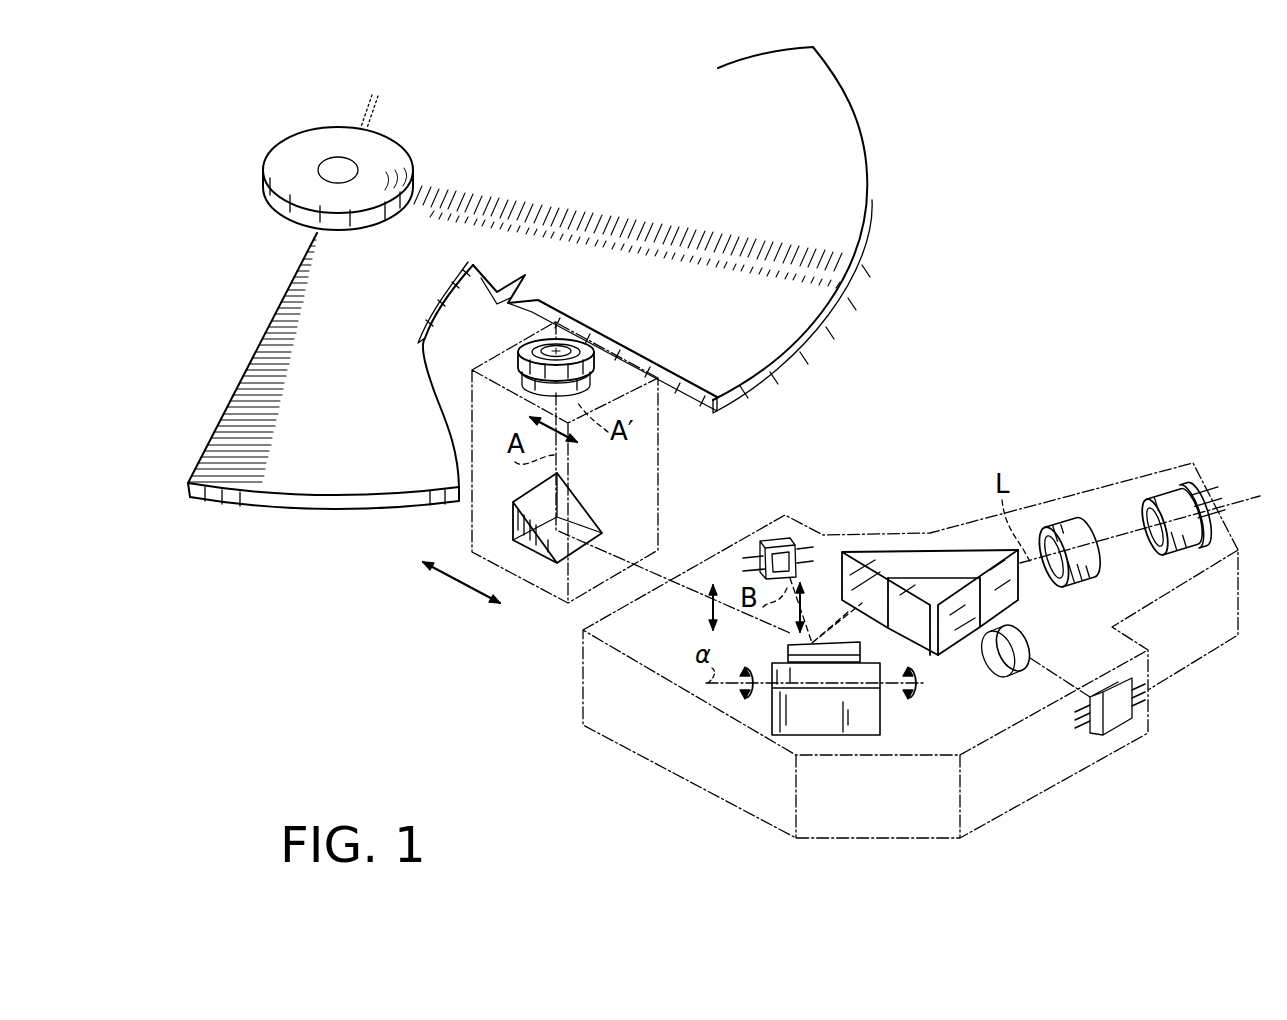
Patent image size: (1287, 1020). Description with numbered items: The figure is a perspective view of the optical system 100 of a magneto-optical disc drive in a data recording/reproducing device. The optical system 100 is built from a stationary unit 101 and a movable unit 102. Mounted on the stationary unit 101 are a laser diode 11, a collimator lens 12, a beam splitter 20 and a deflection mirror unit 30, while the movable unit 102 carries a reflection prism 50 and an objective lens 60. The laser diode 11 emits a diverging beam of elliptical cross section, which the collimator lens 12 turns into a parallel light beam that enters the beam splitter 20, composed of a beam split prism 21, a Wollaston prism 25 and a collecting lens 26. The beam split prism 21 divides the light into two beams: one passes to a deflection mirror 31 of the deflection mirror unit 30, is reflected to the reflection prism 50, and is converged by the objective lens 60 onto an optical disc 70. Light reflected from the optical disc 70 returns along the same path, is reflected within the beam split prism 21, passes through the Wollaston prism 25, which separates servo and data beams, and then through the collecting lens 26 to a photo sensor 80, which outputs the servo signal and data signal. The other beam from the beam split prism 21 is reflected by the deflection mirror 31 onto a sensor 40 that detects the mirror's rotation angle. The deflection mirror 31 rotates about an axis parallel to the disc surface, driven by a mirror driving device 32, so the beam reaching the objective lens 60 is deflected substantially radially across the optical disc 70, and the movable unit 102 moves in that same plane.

The optical disc 70 is at (833, 220).
The objective lens 60 is at (517, 347).
The reflection prism 50 is at (572, 517).
The movable unit 102 is at (555, 600).
The sensor 40 is at (773, 537).
The beam splitter 20 is at (930, 584).
The beam split prism 21 is at (930, 568).
The Wollaston prism 25 is at (957, 645).
The collecting lens 26 is at (1035, 652).
The collimator lens 12 is at (1070, 528).
The laser diode 11 is at (1180, 530).
The photo sensor 80 is at (1132, 718).
The stationary unit 101 is at (993, 790).
The optical system 100 is at (1225, 448).
The deflection mirror unit 30 is at (811, 743).
The deflection mirror 31 is at (788, 650).
The mirror driving device 32 is at (785, 722).